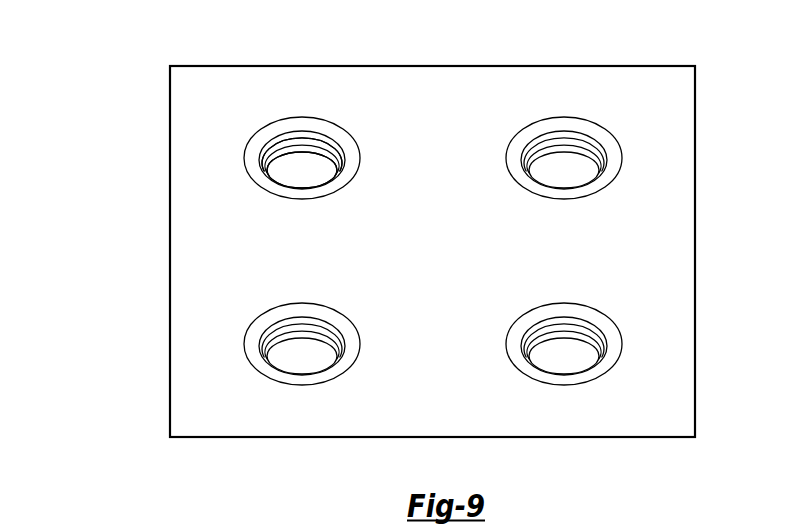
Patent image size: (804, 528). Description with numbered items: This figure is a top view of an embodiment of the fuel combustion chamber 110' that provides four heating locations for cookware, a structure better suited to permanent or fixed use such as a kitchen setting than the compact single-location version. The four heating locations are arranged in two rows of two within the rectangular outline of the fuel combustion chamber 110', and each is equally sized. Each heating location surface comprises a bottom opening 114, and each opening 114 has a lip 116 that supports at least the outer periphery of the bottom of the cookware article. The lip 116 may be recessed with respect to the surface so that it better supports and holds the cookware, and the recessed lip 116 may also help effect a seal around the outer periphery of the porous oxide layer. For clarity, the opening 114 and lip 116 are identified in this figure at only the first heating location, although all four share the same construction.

The fuel combustion chamber 110' is at (367, 236).
The opening 114 is at (306, 165).
The lip 116 is at (313, 142).